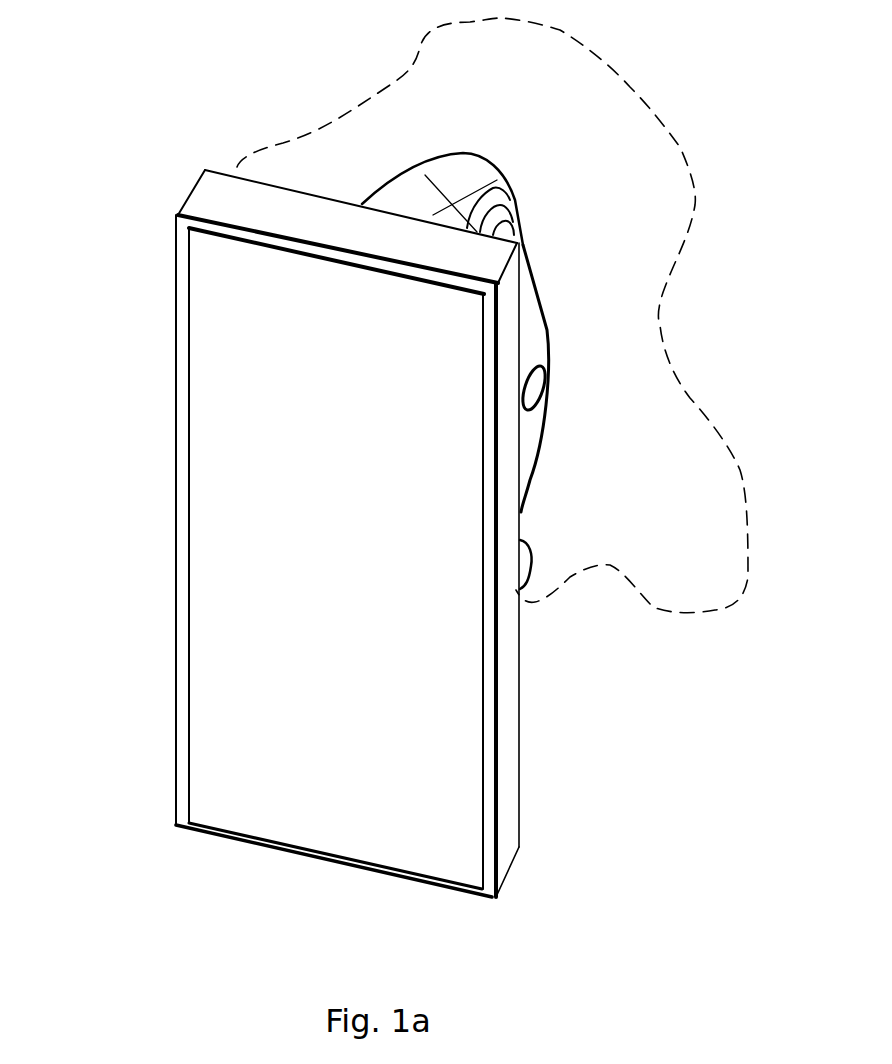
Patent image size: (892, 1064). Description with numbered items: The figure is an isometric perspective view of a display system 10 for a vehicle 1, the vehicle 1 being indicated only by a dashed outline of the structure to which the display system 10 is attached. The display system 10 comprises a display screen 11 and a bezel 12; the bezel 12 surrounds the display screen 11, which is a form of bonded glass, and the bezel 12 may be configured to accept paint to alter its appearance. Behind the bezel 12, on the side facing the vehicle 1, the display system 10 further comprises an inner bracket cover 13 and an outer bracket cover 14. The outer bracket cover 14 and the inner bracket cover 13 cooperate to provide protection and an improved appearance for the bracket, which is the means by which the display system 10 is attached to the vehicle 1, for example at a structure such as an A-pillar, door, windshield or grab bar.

The vehicle 1 is at (563, 570).
The display system 10 is at (341, 475).
The display screen 11 is at (226, 345).
The bezel 12 is at (185, 210).
The inner bracket cover 13 is at (537, 343).
The outer bracket cover 14 is at (459, 160).